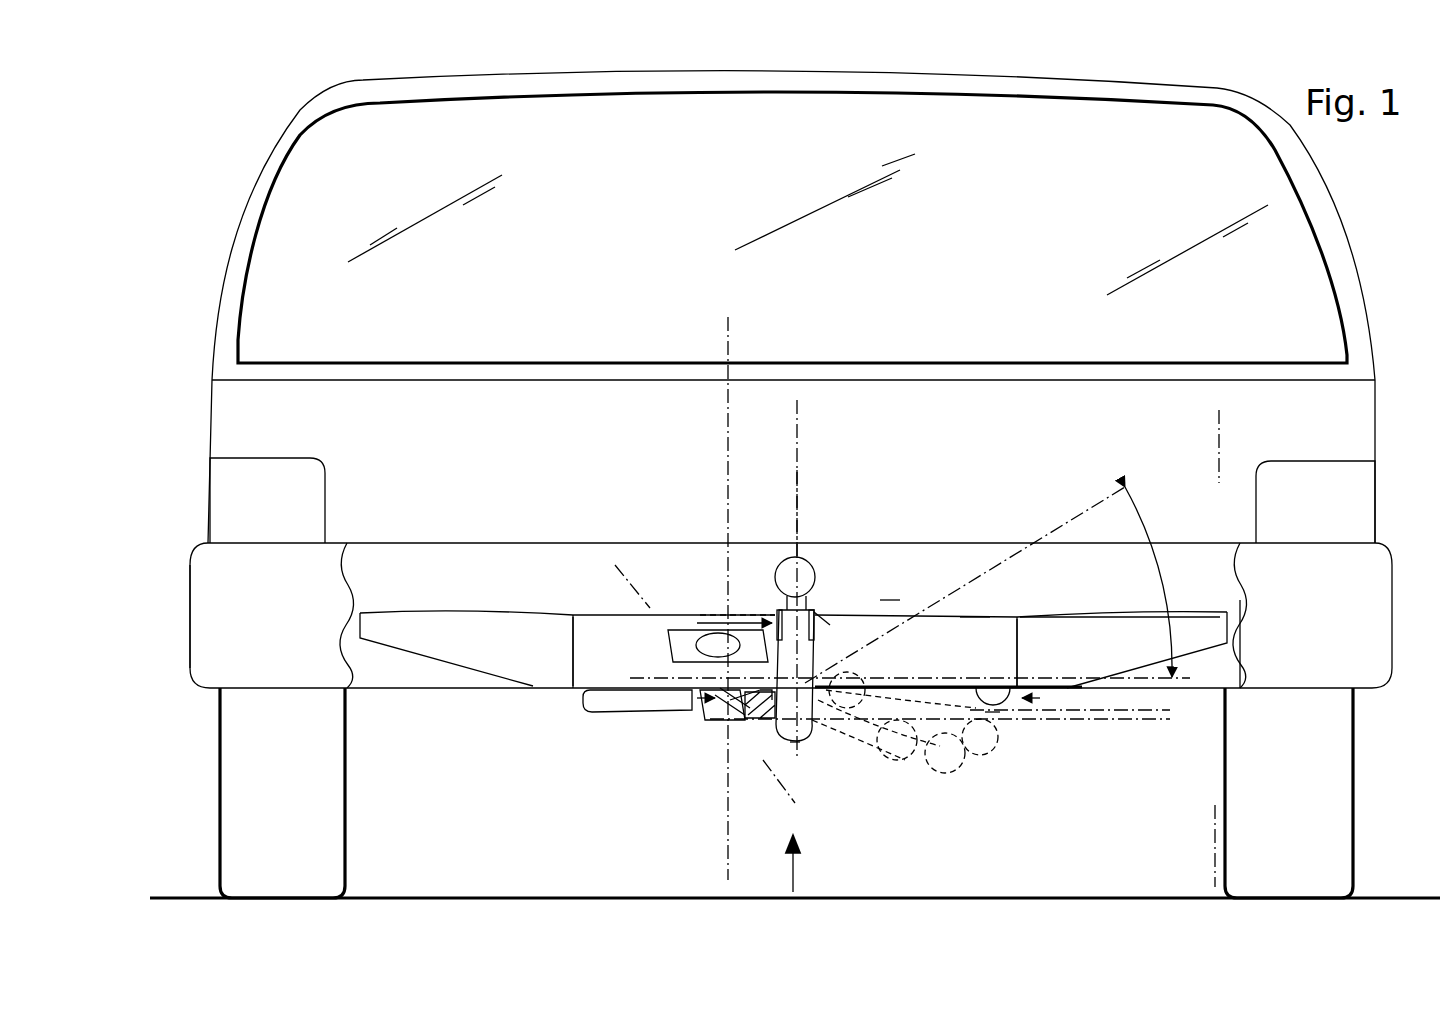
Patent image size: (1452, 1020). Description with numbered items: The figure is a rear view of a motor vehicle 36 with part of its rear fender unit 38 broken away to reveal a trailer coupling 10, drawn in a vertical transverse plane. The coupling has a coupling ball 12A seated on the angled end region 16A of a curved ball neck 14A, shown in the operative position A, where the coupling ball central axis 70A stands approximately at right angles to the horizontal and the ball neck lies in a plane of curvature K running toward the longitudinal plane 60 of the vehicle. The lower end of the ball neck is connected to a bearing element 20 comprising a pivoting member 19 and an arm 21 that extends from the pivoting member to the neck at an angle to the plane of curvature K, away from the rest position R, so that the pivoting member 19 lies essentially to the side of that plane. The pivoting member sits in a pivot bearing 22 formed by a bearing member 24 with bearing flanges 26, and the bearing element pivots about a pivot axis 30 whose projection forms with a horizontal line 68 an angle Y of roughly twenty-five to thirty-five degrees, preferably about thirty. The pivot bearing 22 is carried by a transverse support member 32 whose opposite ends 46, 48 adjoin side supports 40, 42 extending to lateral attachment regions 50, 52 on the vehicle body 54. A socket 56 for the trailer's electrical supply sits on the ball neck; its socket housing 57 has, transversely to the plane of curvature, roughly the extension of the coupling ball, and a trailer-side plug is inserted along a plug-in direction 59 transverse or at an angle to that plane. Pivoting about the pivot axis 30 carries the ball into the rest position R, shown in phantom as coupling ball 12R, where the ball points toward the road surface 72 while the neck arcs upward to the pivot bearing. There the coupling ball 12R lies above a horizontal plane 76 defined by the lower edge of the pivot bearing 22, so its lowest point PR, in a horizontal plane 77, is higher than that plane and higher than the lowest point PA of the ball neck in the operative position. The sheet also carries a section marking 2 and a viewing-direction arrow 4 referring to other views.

The trailer coupling 10 is at (898, 562).
The coupling ball in operative position 12A is at (803, 567).
The coupling ball in rest position 12R is at (1012, 706).
The ball neck in operative position 14A is at (800, 702).
The angled end region of ball neck 16A is at (776, 612).
The pivoting member 19 is at (746, 706).
The bearing element 20 is at (780, 684).
The arm 21 is at (762, 702).
The pivot bearing 22 is at (700, 718).
The bearing member 24 is at (702, 700).
The bearing flange 26 is at (740, 692).
The pivot axis 30 is at (1095, 500).
The transverse support member 32 is at (976, 622).
The motor vehicle 36 is at (1300, 250).
The rear fender unit 38 is at (287, 605).
The side support 40 is at (458, 614).
The side support 42 is at (1113, 619).
The end of transverse support member 46 is at (577, 643).
The end of transverse support member 48 is at (1012, 640).
The lateral attachment region 50 is at (370, 622).
The lateral attachment region 52 is at (1215, 626).
The vehicle body 54 is at (1252, 615).
The socket 56 is at (823, 602).
The socket housing 57 is at (831, 624).
The plug-in direction 59 is at (705, 613).
The longitudinal plane 60 is at (727, 330).
The horizontal line 68 is at (1200, 674).
The coupling ball central axis in operative position 70A is at (800, 492).
The road surface 72 is at (1108, 896).
The horizontal plane 76 is at (1166, 719).
The horizontal plane 77 is at (1166, 710).
The operative position A is at (760, 495).
The rest position R is at (1040, 698).
The plane of curvature K is at (797, 408).
The angle γ Y is at (1146, 526).
The lowest point in operative position PA is at (796, 760).
The lowest point in rest position PR is at (992, 720).
The section line II 2 is at (1228, 425).
The view direction IV 4 is at (613, 577).